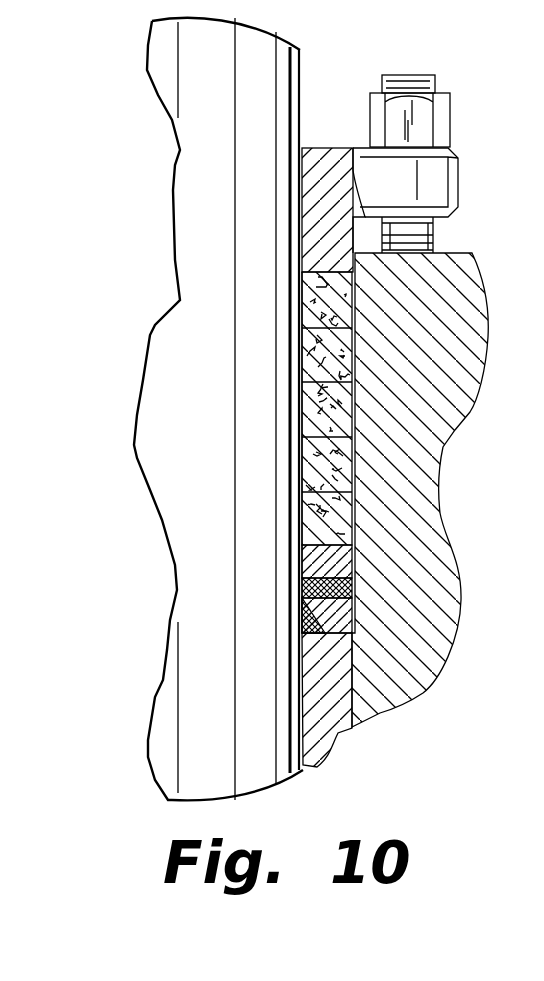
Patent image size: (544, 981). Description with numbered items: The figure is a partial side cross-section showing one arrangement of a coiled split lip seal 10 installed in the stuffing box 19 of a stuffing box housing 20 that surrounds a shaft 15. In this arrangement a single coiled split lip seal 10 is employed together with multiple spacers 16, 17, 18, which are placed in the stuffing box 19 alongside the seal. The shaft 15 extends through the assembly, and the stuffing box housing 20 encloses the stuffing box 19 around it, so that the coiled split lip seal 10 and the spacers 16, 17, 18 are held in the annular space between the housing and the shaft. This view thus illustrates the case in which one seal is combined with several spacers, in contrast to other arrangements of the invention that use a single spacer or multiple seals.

The coiled split lip seal 10 is at (358, 592).
The shaft 15 is at (300, 63).
The spacer 16 is at (365, 420).
The spacer 17 is at (357, 563).
The spacer 18 is at (357, 628).
The stuffing box 19 is at (330, 147).
The stuffing box housing 20 is at (472, 252).